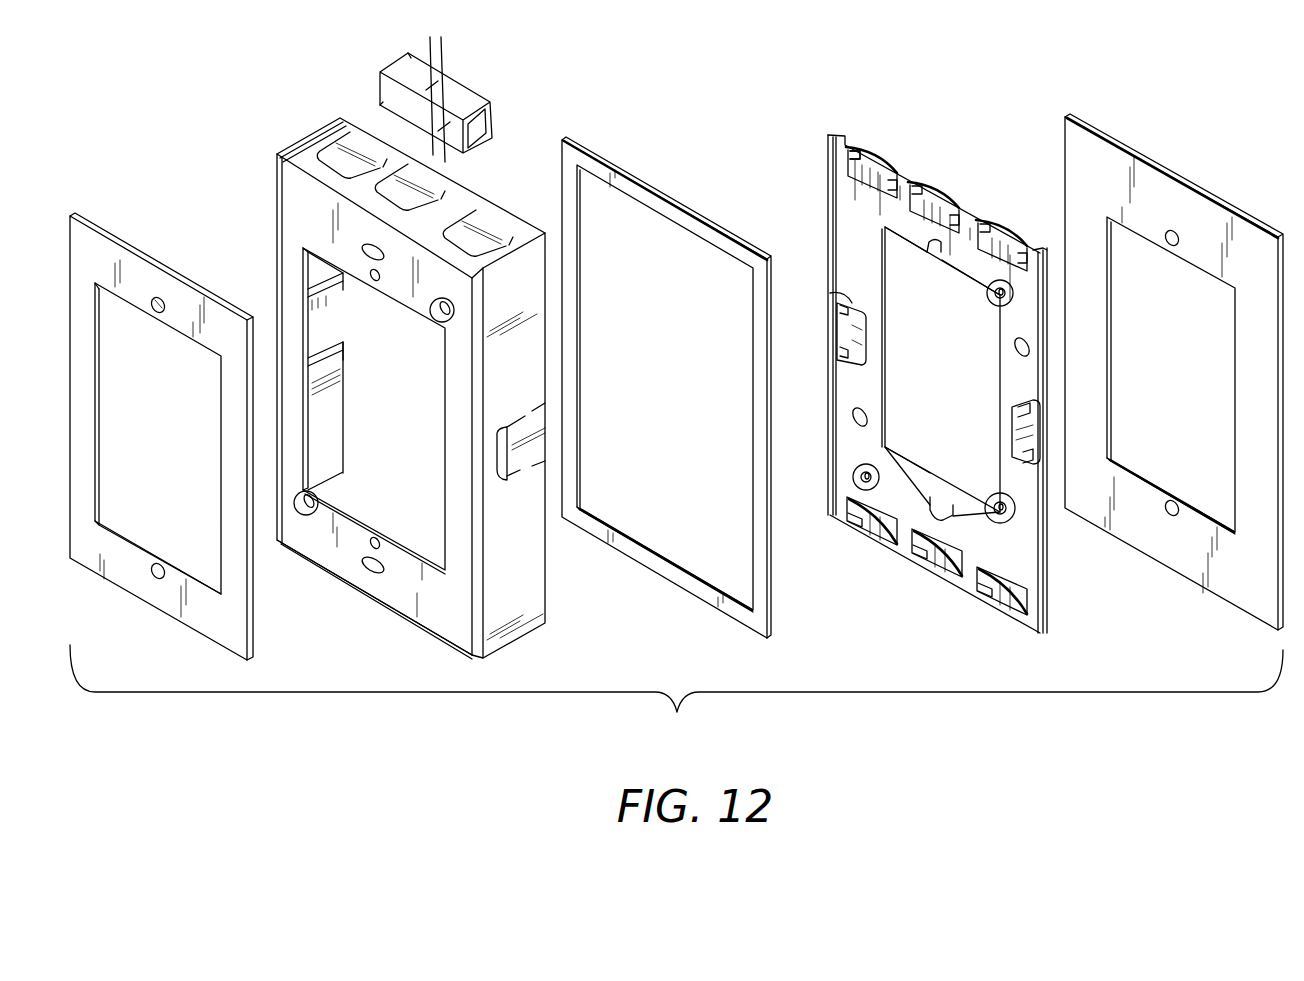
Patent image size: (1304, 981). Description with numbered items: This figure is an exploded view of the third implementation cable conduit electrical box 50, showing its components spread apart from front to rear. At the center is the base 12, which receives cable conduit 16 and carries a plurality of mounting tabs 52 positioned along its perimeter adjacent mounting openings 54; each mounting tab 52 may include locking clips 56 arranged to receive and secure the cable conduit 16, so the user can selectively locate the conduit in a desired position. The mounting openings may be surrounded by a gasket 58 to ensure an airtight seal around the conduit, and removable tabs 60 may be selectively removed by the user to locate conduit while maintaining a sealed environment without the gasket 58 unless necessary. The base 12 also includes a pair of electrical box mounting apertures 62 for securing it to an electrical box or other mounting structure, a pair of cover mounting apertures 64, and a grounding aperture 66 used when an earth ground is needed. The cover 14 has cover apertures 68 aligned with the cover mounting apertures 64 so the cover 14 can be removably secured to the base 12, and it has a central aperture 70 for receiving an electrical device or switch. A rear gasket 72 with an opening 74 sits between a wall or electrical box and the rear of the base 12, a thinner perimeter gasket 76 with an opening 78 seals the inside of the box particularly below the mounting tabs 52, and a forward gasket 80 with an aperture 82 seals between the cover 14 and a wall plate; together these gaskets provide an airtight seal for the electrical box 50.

The base 12 is at (828, 135).
The cover 14 is at (277, 153).
The cable conduit 16 is at (470, 85).
The cable conduit electrical box 50 is at (677, 712).
The mounting tabs 52 is at (980, 227).
The mounting openings 54 is at (326, 316).
The locking clips 56 is at (838, 295).
The gasket 58 is at (347, 278).
The removable tabs 60 is at (343, 138).
The electrical box mounting apertures 62 is at (942, 500).
The cover mounting apertures 64 is at (1007, 307).
The grounding aperture 66 is at (1020, 530).
The cover apertures 68 is at (432, 322).
The central aperture 70 is at (403, 517).
The rear gasket 72 is at (1097, 122).
The opening 74 is at (1164, 278).
The perimeter gasket 76 is at (599, 151).
The opening 78 is at (698, 537).
The forward gasket 80 is at (107, 227).
The aperture 82 is at (114, 318).